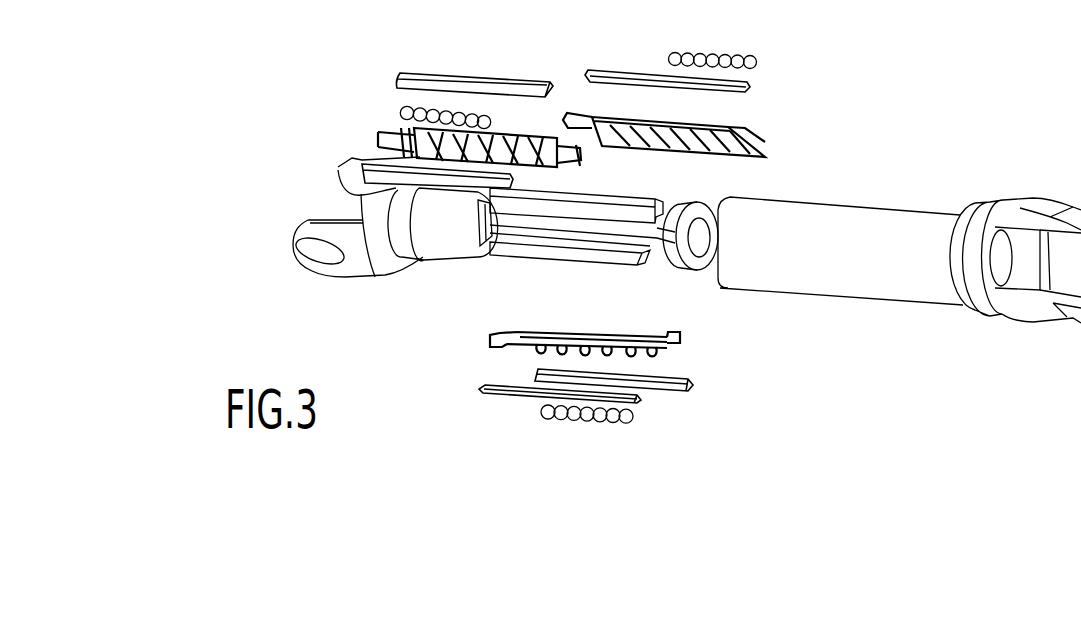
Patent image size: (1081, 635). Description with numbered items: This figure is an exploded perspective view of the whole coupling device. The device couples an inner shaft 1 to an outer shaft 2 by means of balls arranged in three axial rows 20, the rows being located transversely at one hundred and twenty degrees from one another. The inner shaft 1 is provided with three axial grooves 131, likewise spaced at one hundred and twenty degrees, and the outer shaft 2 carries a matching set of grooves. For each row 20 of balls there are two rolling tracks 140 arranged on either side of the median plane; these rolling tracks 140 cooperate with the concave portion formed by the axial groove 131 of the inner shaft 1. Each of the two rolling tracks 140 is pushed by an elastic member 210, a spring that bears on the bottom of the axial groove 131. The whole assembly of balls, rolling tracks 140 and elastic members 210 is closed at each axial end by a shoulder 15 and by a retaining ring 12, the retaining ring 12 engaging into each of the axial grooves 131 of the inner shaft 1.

The inner shaft 1 is at (450, 256).
The outer shaft 2 is at (914, 218).
The retaining ring 12 is at (693, 270).
The shoulder 15 is at (483, 252).
The axial rows 20 is at (401, 111).
The axial grooves 131 is at (602, 228).
The rolling tracks 140 is at (471, 72).
The elastic member 210 is at (560, 162).